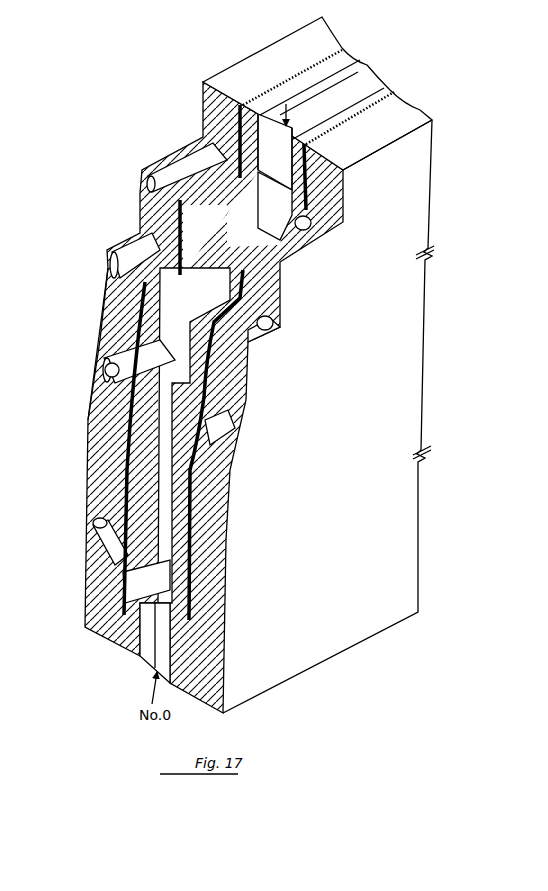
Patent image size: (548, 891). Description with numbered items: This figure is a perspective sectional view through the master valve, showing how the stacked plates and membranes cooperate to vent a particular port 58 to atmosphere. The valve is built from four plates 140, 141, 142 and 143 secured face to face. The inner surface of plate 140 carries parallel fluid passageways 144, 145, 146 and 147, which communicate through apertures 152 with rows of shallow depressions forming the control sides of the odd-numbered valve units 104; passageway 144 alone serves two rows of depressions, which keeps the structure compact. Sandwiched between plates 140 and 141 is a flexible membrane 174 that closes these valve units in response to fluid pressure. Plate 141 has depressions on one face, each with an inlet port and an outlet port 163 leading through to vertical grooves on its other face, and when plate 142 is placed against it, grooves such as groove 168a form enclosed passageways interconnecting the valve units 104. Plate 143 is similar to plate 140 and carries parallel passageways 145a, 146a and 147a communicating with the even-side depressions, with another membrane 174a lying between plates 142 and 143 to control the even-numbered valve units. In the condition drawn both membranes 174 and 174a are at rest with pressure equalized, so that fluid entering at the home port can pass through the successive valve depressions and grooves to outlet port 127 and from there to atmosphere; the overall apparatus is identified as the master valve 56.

The mold assembly 56 is at (157, 96).
The plate 140 is at (266, 58).
The valve units 104 is at (222, 131).
The fluid passageway 147 is at (187, 167).
The outlet port 127 is at (288, 118).
The flexible diaphragm or membrane 174 is at (340, 50).
The valve plate 141 is at (358, 73).
The plate 142 is at (376, 90).
The flexible diaphragm or membrane 174a is at (392, 97).
The plate 143 is at (424, 170).
The apertures 152 is at (308, 232).
The passageway 147a is at (277, 253).
The fluid passageway 146 is at (138, 262).
The passageway 146a is at (243, 333).
The outlet port 163 is at (106, 322).
The fluid passageway 145 is at (110, 368).
The passageway 145a is at (228, 440).
The groove 168a is at (166, 508).
The fluid passageway 144 is at (102, 533).
The port 58 is at (142, 655).